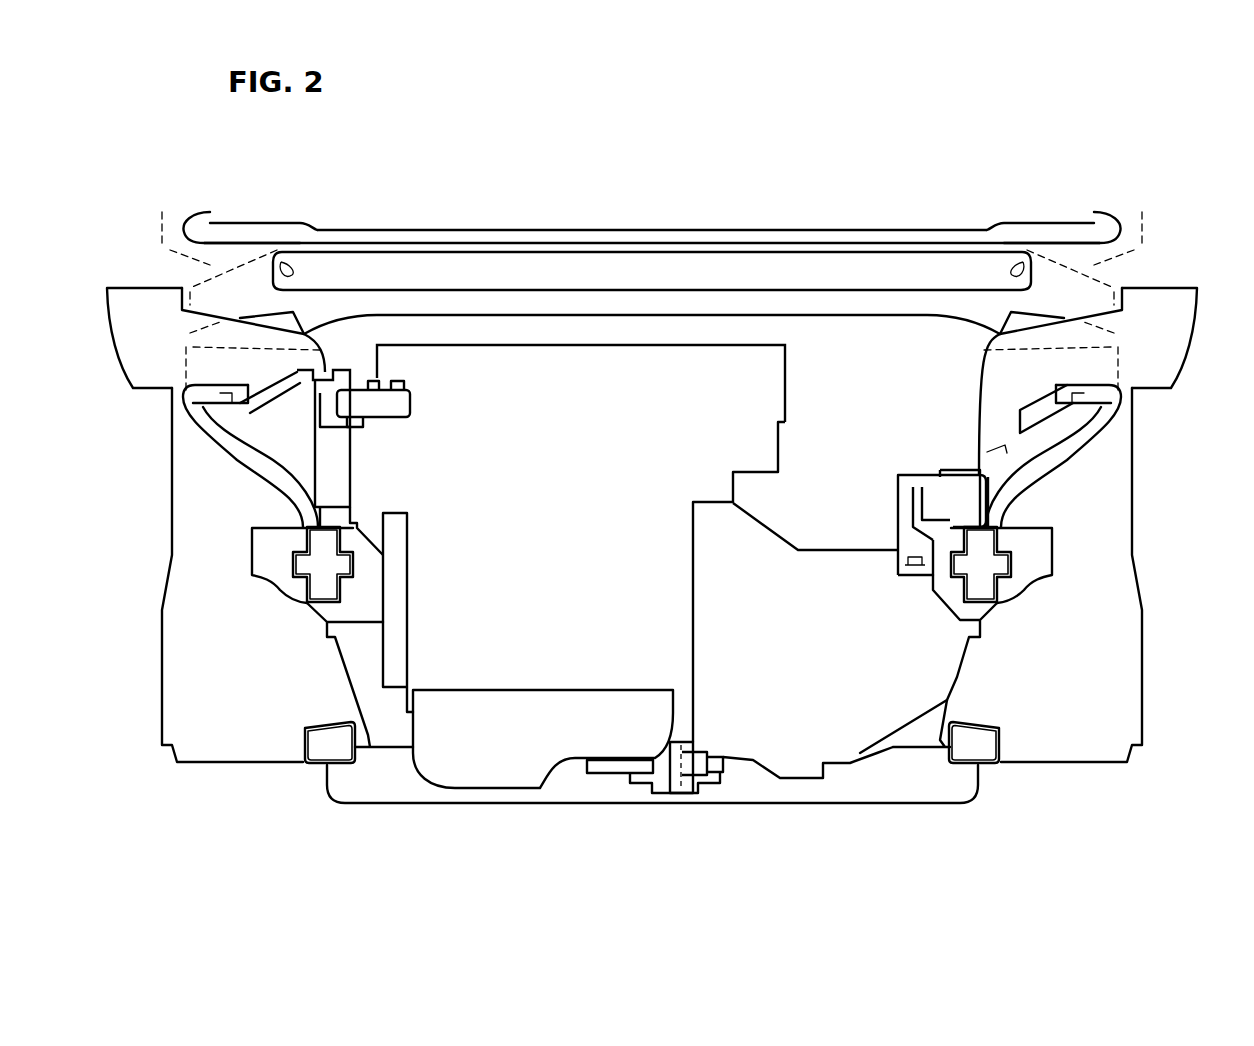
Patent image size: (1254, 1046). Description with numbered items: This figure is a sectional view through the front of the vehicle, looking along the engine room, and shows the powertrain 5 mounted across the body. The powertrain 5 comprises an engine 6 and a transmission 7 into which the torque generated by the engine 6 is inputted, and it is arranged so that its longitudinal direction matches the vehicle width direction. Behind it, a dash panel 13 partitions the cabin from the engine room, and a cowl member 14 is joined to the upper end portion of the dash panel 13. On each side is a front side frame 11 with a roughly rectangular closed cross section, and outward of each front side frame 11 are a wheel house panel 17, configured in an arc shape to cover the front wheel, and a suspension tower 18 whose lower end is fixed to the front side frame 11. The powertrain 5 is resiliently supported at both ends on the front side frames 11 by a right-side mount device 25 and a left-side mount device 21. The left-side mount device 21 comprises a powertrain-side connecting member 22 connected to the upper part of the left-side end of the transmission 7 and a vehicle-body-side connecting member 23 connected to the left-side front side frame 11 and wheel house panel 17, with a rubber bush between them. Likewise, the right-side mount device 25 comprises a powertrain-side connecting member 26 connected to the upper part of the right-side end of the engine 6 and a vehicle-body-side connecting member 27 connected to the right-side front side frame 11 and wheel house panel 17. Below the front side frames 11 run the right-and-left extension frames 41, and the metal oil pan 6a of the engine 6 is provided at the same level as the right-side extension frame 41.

The powertrain 5 is at (637, 569).
The engine 6 is at (768, 392).
The oil pan 6a is at (480, 765).
The transmission 7 is at (762, 550).
The front side frame 11 is at (275, 538).
The dash panel 13 is at (880, 327).
The cowl member 14 is at (657, 267).
The wheel house panel 17 is at (245, 422).
The suspension tower 18 is at (273, 338).
The left-side mount device 21 is at (913, 468).
The powertrain-side connecting member 22 is at (907, 510).
The vehicle-body-side connecting member 23 is at (950, 497).
The right-side mount device 25 is at (357, 372).
The powertrain-side connecting member 26 is at (397, 405).
The vehicle-body-side connecting member 27 is at (335, 460).
The extension frame 41 is at (303, 737).